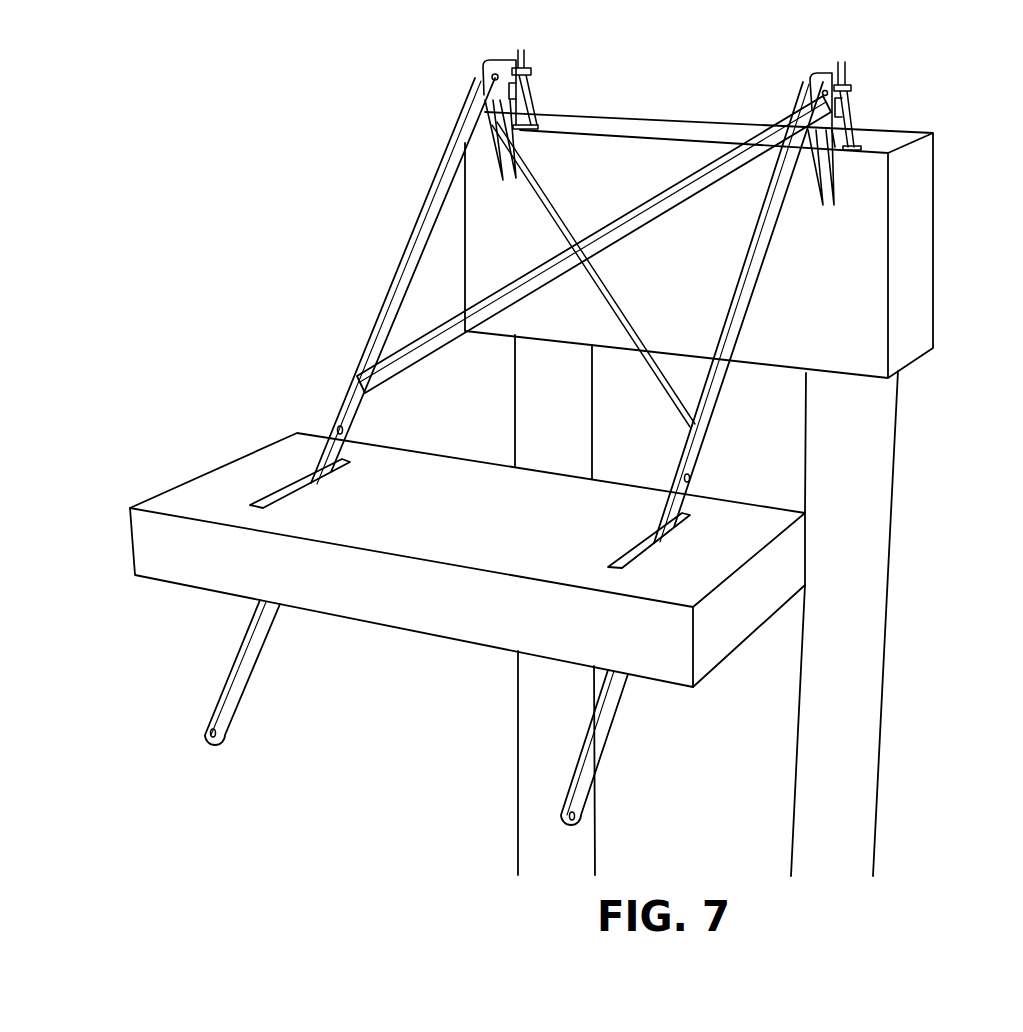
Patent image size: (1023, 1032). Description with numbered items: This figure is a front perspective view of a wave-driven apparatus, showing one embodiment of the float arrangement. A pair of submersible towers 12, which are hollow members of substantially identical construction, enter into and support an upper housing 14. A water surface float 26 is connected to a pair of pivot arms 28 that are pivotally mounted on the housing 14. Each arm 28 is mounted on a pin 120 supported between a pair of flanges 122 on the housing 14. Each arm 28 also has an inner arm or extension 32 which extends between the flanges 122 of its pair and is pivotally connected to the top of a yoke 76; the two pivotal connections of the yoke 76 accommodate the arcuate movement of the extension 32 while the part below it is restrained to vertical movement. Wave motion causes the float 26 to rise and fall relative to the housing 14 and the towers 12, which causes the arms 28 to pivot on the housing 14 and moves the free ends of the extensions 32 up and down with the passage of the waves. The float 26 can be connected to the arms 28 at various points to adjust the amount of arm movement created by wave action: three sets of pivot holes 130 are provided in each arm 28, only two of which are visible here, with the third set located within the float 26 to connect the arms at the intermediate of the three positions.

The submersible tower 12 is at (573, 452).
The upper housing 14 is at (913, 320).
The water surface float 26 is at (468, 541).
The pivot arm 28 is at (359, 353).
The extension 32 is at (847, 84).
The yoke 76 is at (537, 100).
The pin 120 is at (496, 76).
The flange 122 is at (478, 66).
The pivot hole 130 is at (345, 429).